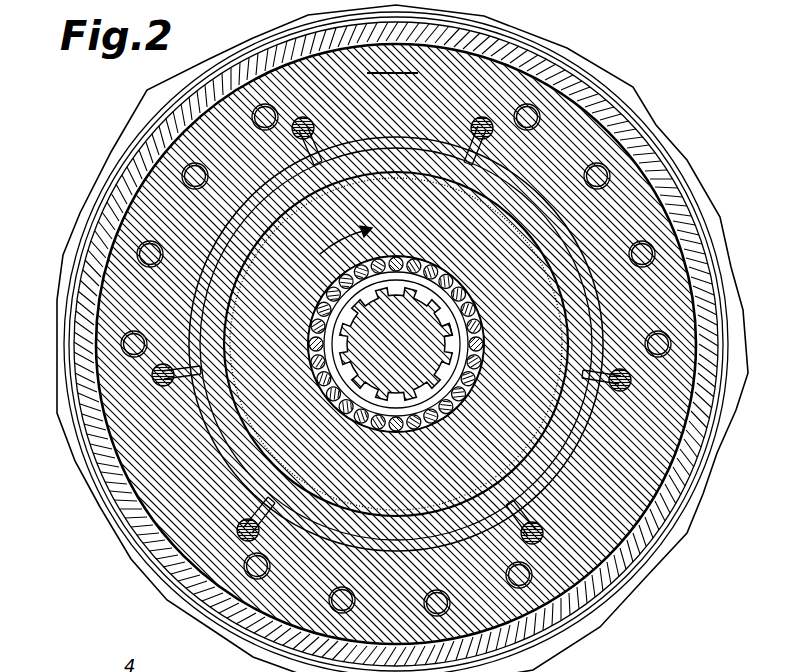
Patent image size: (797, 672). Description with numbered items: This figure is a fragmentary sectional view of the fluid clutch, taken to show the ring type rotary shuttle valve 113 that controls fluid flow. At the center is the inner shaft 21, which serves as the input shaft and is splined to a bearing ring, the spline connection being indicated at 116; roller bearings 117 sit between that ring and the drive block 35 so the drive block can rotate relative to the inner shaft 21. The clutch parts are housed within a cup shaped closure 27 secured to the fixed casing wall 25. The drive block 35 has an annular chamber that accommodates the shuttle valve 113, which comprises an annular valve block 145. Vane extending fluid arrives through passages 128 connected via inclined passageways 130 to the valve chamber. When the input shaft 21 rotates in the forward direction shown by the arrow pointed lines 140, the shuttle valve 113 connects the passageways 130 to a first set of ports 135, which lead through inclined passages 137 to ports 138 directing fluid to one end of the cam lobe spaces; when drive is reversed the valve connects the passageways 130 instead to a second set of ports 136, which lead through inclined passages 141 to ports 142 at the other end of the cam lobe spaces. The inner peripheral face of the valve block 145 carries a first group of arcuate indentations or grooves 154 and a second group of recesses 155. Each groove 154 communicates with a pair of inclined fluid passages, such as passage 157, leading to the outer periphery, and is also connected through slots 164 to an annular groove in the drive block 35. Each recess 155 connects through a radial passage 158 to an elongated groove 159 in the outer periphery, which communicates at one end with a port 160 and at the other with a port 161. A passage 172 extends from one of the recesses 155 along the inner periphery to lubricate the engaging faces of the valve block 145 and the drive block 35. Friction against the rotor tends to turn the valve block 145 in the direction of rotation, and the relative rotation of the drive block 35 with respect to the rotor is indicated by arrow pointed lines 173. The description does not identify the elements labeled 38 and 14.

The fixed casing wall 25 is at (150, 101).
The cup shaped closure 27 is at (136, 160).
The drive block 35 is at (676, 469).
The bolt holes 38 is at (253, 117).
The rotary shuttle valve 113 is at (413, 143).
The arrow pointed lines 173 is at (405, 73).
The ports 142 is at (481, 117).
The ports 138 is at (308, 118).
The inclined passages 137 is at (345, 145).
The first set of ports 135 is at (300, 140).
The second set of ports 136 is at (494, 128).
The inclined passages 141 is at (495, 165).
The port 161 is at (520, 180).
The radial passage 158 is at (240, 225).
The elongated groove 159 is at (215, 258).
The port 160 is at (290, 225).
The passage 172 is at (255, 235).
The indentations or recesses 155 is at (270, 255).
The inclined passageways 130 is at (305, 262).
The arrow pointed lines 140 is at (346, 230).
The slots 164 is at (362, 200).
The roller bearings 117 is at (404, 257).
The shaft sleeve 14 is at (420, 273).
The arcuate indentations or grooves 154 is at (478, 215).
The inclined fluid passage 157 is at (283, 372).
The valve block 145 is at (592, 310).
The passage 128 is at (318, 290).
The inner shaft 21 is at (399, 346).
The spline connection 116 is at (414, 349).